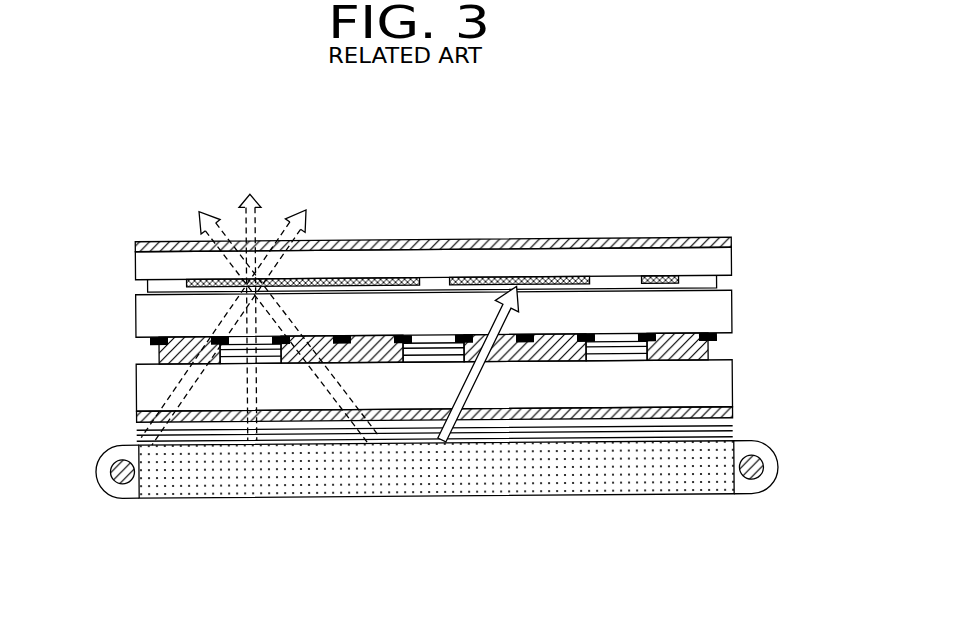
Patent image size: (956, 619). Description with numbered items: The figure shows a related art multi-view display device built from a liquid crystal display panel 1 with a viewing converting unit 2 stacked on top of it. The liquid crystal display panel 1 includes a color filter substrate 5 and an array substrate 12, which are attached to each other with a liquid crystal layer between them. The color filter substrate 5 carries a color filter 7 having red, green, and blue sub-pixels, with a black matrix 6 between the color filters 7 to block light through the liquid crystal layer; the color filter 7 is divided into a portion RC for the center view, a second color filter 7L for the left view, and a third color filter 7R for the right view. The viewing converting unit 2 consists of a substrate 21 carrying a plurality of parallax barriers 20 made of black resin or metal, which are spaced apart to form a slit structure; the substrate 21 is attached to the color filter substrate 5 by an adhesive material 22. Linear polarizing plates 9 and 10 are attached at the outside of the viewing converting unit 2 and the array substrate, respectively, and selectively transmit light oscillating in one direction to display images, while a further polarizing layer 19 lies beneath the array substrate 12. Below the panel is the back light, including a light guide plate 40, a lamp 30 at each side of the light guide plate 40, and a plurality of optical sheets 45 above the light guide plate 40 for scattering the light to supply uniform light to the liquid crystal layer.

The linear polarizing plate 10 is at (425, 386).
The viewing converting unit 2 is at (407, 245).
The liquid crystal display panel 1 is at (408, 438).
The linear polarizing plate 9 is at (136, 242).
The substrate 21 is at (140, 264).
The adhesive material 22 is at (148, 290).
The parallax barrier 20 is at (392, 277).
The color filter substrate 5 is at (140, 313).
The black matrix 6 is at (150, 339).
The array substrate 12 is at (140, 378).
The lower polarizer 19 is at (140, 414).
The optical sheets 45 is at (722, 433).
The light guide plate 40 is at (630, 486).
The lamp 30 is at (748, 481).
The third color filter 7R is at (213, 362).
The center pixel RC is at (268, 362).
The second color filter 7L is at (338, 362).
The color filter 7 is at (282, 460).